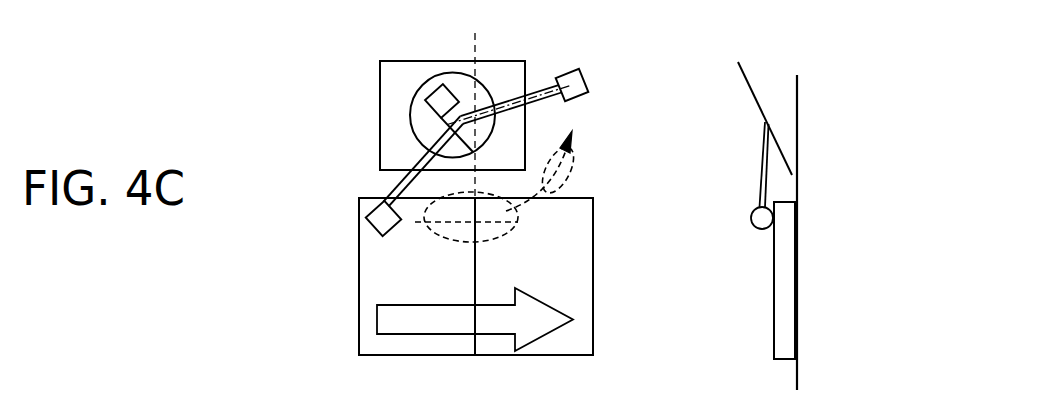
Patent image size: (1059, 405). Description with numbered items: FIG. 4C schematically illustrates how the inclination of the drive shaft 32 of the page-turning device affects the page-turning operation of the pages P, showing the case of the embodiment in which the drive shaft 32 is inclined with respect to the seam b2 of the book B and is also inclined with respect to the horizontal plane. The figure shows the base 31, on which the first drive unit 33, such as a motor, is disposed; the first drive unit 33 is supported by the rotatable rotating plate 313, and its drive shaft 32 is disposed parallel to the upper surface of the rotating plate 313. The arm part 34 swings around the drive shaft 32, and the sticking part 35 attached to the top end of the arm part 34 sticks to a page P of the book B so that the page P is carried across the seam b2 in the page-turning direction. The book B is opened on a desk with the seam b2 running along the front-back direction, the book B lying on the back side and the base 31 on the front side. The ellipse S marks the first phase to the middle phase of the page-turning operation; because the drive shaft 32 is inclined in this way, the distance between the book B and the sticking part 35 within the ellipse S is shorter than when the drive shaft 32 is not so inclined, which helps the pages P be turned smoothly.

The base 31 is at (513, 75).
The rotating plate 313 is at (470, 80).
The drive shaft 32 is at (441, 82).
The first drive unit 33 is at (425, 100).
The arm part 34 is at (395, 189).
The sticking part 35 is at (365, 216).
The ellipse S is at (513, 227).
The book B is at (597, 235).
The page P is at (372, 281).
The seam b2 is at (470, 343).